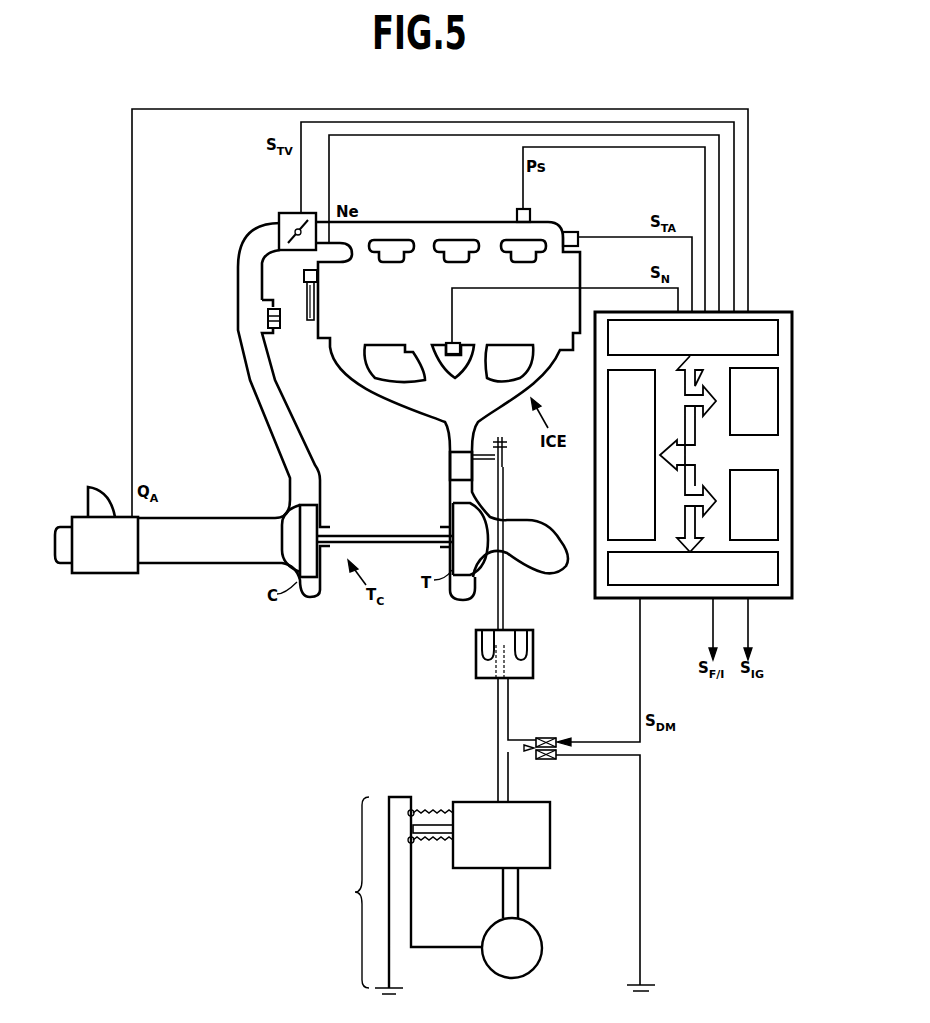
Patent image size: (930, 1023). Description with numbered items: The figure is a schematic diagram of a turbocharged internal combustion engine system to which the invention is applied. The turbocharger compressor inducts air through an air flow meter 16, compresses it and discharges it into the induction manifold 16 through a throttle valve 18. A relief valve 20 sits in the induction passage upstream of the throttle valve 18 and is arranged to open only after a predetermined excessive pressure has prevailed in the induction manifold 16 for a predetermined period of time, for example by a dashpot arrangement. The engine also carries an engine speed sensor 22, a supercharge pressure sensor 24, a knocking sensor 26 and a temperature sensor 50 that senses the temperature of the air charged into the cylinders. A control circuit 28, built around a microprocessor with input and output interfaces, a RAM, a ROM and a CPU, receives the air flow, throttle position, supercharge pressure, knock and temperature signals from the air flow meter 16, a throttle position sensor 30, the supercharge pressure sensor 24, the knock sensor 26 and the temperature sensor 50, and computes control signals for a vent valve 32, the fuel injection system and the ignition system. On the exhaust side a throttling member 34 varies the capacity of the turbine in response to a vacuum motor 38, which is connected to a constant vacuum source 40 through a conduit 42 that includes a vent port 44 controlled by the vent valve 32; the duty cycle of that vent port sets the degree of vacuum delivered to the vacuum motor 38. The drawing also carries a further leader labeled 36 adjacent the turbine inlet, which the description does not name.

The air flow meter / induction manifold 16 is at (428, 226).
The throttle valve 18 is at (292, 237).
The relief valve 20 is at (282, 325).
The engine speed sensor 22 is at (304, 271).
The supercharge pressure sensor 24 is at (516, 210).
The knocking sensor 26 is at (447, 342).
The control circuit 28 is at (783, 310).
The throttle position sensor 30 is at (281, 213).
The vent valve 32 is at (534, 745).
The throttling member 34 is at (452, 462).
The wastegate passage 36 is at (468, 496).
The vacuum motor 38 is at (534, 652).
The constant vacuum source 40 is at (435, 892).
The conduit 42 is at (498, 777).
The vent port 44 is at (524, 748).
The temperature sensor 50 is at (571, 233).